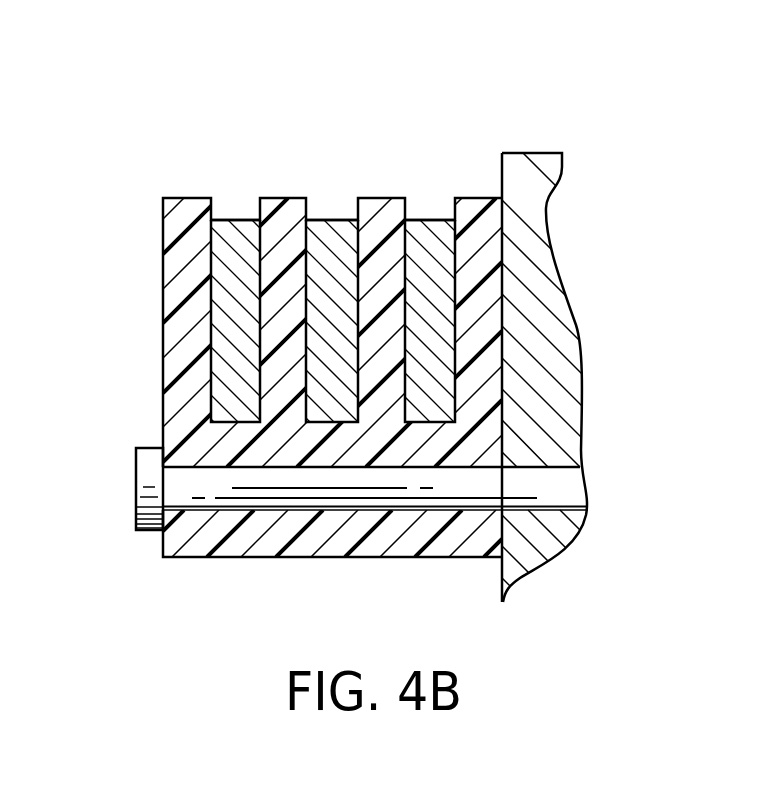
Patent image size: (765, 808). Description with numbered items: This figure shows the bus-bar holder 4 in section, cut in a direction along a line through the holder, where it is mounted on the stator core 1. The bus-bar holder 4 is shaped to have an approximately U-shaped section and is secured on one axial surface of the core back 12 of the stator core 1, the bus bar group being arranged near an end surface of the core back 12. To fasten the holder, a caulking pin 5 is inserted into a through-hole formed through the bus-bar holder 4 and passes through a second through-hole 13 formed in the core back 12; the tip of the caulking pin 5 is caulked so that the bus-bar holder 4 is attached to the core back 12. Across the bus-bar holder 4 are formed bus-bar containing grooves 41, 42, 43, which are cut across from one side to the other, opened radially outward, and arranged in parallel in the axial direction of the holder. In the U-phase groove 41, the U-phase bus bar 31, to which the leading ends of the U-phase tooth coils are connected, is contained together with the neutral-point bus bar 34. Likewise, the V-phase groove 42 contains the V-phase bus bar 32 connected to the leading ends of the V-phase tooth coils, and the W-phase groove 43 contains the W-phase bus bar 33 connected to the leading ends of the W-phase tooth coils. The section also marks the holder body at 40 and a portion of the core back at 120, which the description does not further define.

The stator core 1 is at (549, 333).
The bus-bar holder 4 is at (335, 566).
The caulking pin 5 is at (125, 475).
The core back 12 is at (549, 292).
The second through-hole 13 is at (547, 508).
The U-phase bus bar 31 is at (227, 237).
The V-phase bus bar 32 is at (322, 232).
The W-phase bus bar 33 is at (428, 237).
The neutral-point bus bar 34 is at (310, 266).
The comb-shaped body 40 is at (371, 360).
The U-phase groove 41 is at (245, 200).
The V-phase groove 42 is at (346, 200).
The W-phase groove 43 is at (440, 200).
The corner portion 120 is at (502, 163).